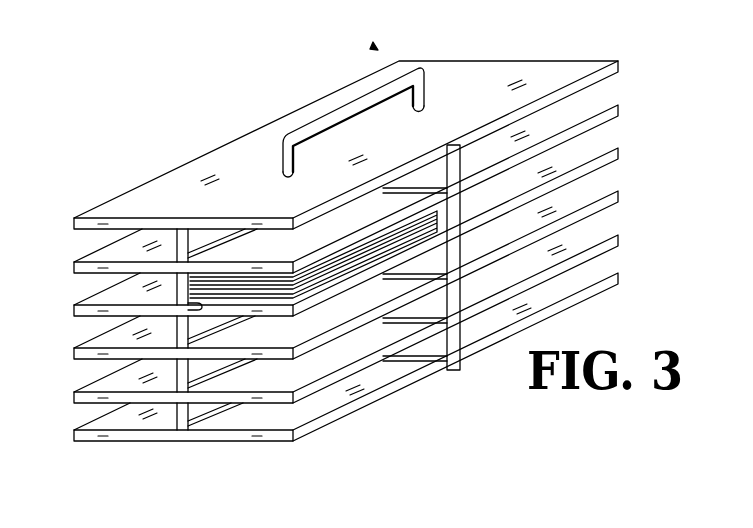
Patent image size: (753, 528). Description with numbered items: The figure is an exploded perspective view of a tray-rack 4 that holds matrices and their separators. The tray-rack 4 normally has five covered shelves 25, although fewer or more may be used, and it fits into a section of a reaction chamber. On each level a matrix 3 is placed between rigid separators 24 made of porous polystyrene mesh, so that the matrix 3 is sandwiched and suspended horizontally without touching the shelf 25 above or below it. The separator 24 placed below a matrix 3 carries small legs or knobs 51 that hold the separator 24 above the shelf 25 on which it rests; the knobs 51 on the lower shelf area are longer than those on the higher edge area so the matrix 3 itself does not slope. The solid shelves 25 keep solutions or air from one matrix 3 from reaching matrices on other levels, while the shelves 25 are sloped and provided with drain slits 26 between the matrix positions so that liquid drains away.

The matrix 3 is at (357, 288).
The tray-rack 4 is at (375, 46).
The separator 24 is at (307, 280).
The shelf 25 is at (619, 63).
The drain slit 26 is at (236, 324).
The knob 51 is at (186, 308).